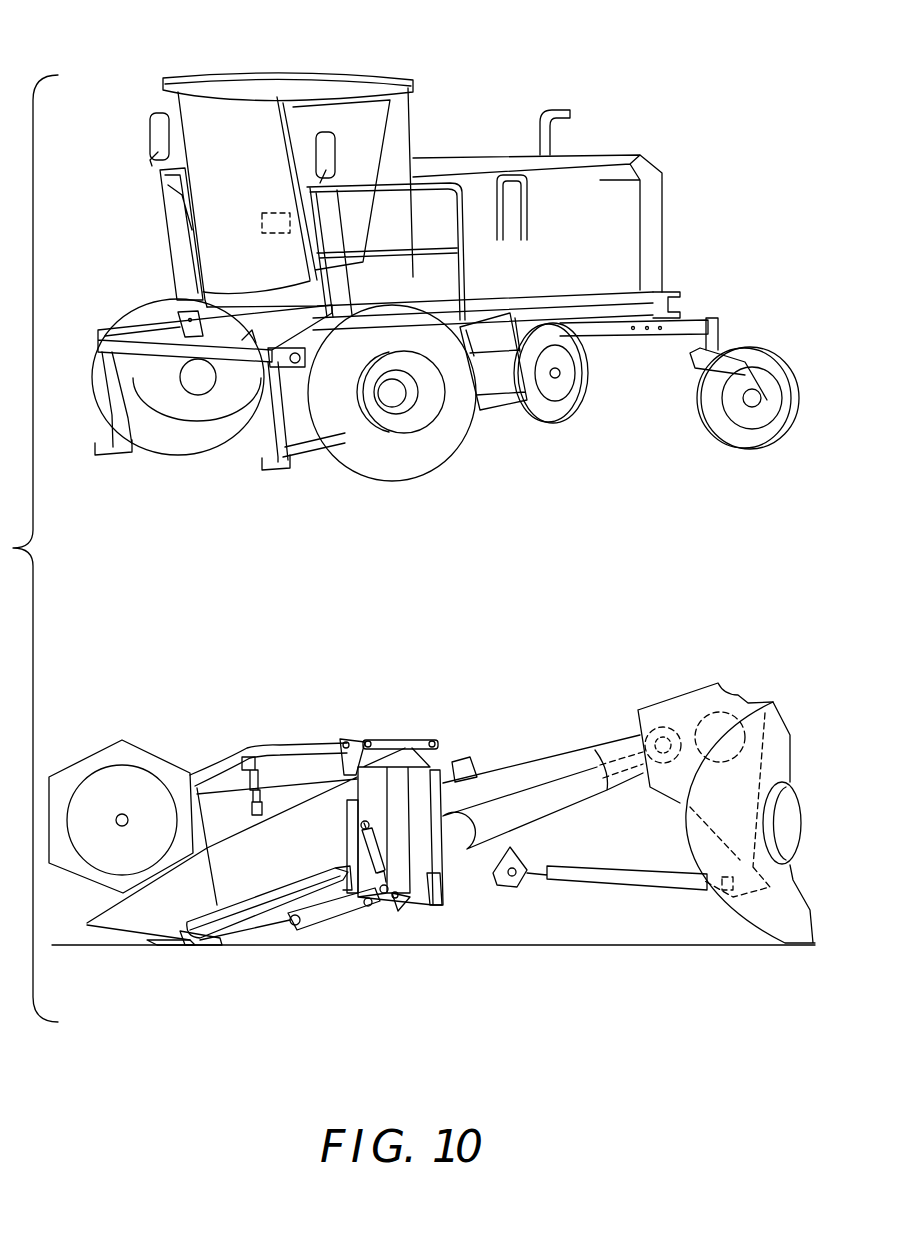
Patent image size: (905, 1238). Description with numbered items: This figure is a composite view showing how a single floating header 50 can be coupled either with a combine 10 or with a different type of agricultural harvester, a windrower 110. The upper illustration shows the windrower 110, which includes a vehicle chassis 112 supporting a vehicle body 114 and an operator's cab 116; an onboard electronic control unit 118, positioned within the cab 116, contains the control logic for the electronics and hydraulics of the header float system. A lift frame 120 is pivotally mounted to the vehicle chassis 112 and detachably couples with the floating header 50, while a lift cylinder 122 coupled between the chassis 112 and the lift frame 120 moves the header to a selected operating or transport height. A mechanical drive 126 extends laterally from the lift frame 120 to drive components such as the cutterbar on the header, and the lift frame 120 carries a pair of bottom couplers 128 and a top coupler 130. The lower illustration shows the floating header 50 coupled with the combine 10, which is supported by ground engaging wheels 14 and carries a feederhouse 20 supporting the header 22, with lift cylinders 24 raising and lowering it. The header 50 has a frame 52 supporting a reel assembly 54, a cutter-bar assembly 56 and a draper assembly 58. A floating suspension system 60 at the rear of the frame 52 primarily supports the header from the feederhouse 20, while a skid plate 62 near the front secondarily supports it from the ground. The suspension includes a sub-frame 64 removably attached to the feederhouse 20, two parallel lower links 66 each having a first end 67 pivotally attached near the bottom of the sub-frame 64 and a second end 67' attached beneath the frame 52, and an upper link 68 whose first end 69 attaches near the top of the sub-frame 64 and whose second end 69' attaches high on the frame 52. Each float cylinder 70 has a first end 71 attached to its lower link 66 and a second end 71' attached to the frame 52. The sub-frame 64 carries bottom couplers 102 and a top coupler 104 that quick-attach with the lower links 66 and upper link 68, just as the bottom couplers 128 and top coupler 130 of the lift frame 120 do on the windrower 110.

The windrower 110 is at (424, 281).
The vehicle chassis 112 is at (608, 307).
The vehicle body 114 is at (472, 158).
The operator's cab 116 is at (310, 78).
The electronic control unit 118 is at (260, 223).
The lift frame 120 is at (258, 432).
The lift cylinder 122 is at (303, 453).
The mechanical drive 126 is at (303, 397).
The bottom coupler 128 is at (105, 447).
The top coupler 130 is at (175, 318).
The combine 10 is at (432, 814).
The ground engaging wheel 14 is at (720, 922).
The feederhouse 20 is at (563, 800).
The header 22 is at (440, 819).
The lift cylinder 24 is at (650, 896).
The floating header 50 is at (219, 845).
The frame 52 is at (273, 925).
The reel assembly 54 is at (107, 757).
The cutter-bar assembly 56 is at (157, 952).
The draper assembly 58 is at (259, 890).
The floating suspension system 60 is at (385, 930).
The skid plate 62 is at (200, 950).
The sub-frame 64 is at (420, 866).
The lower link 66 is at (330, 917).
The first end 67 is at (440, 909).
The second end 67' is at (306, 955).
The upper link 68 is at (385, 740).
The first end 69 is at (439, 698).
The second end 69' is at (331, 726).
The float cylinder 70 is at (365, 847).
The first end 71 is at (374, 942).
The second end 71' is at (333, 821).
The bottom coupler 102 is at (400, 910).
The top coupler 104 is at (443, 753).